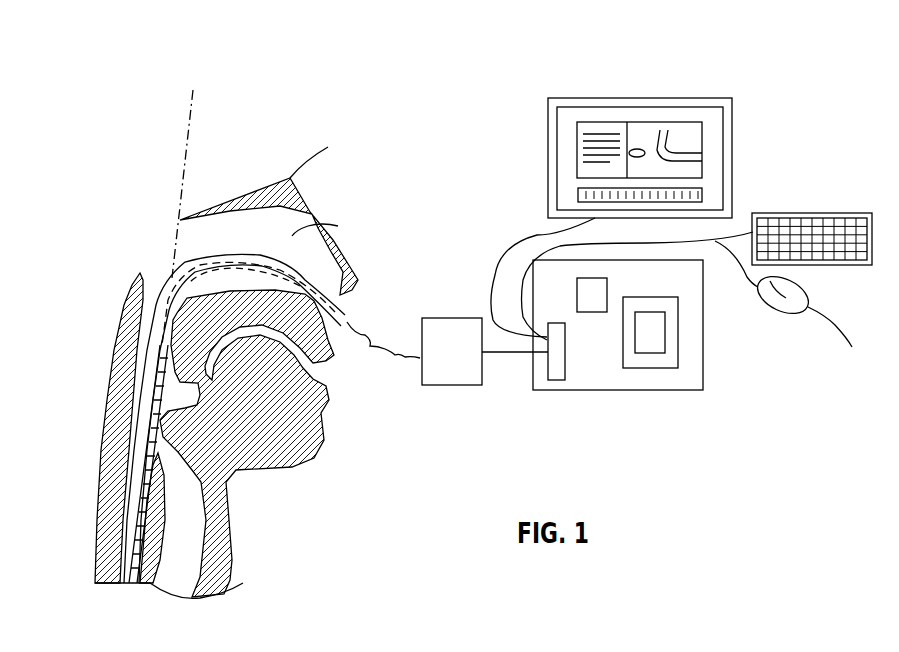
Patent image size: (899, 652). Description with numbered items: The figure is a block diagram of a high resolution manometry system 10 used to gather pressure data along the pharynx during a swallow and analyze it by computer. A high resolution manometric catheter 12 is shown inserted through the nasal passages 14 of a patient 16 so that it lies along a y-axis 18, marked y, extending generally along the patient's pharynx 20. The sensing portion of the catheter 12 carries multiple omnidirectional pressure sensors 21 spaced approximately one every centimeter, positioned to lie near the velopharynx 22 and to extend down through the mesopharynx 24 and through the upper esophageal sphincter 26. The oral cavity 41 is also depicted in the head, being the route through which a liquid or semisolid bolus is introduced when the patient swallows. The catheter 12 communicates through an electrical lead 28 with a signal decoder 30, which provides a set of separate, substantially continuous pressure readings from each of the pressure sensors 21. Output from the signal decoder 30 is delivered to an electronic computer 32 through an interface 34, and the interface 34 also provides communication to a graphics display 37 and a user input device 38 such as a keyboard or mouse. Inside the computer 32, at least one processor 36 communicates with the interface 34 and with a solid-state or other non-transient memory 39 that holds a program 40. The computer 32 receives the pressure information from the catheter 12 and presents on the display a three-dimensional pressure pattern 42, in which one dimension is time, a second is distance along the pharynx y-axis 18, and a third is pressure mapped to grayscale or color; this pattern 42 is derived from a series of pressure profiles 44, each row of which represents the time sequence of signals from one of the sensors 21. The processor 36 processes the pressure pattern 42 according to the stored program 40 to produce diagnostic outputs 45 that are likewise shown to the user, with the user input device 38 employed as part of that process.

The high resolution manometry system 10 is at (797, 52).
The high resolution manometric catheter 12 is at (150, 403).
The nasal passages 14 is at (290, 252).
The patient 16 is at (315, 200).
The y-axis 18 is at (187, 133).
The pharynx 20 is at (163, 253).
The omnidirectional pressure sensors 21 is at (136, 464).
The velopharynx 22 is at (152, 290).
The mesopharynx 24 is at (128, 338).
The upper esophageal sphincter 26 is at (172, 487).
The electrical lead 28 is at (397, 347).
The signal decoder 30 is at (485, 351).
The electronic computer 32 is at (703, 327).
The interface 34 is at (548, 365).
The processor 36 is at (600, 312).
The graphics display 37 is at (726, 98).
The user input device 38 is at (857, 267).
The memory 39 is at (667, 368).
The program 40 is at (660, 342).
The oral cavity 41 is at (312, 368).
The three-dimensional pressure pattern 42 is at (645, 130).
The pressure profiles 44 is at (600, 133).
The diagnostic outputs 45 is at (705, 193).
The y direction y is at (180, 180).